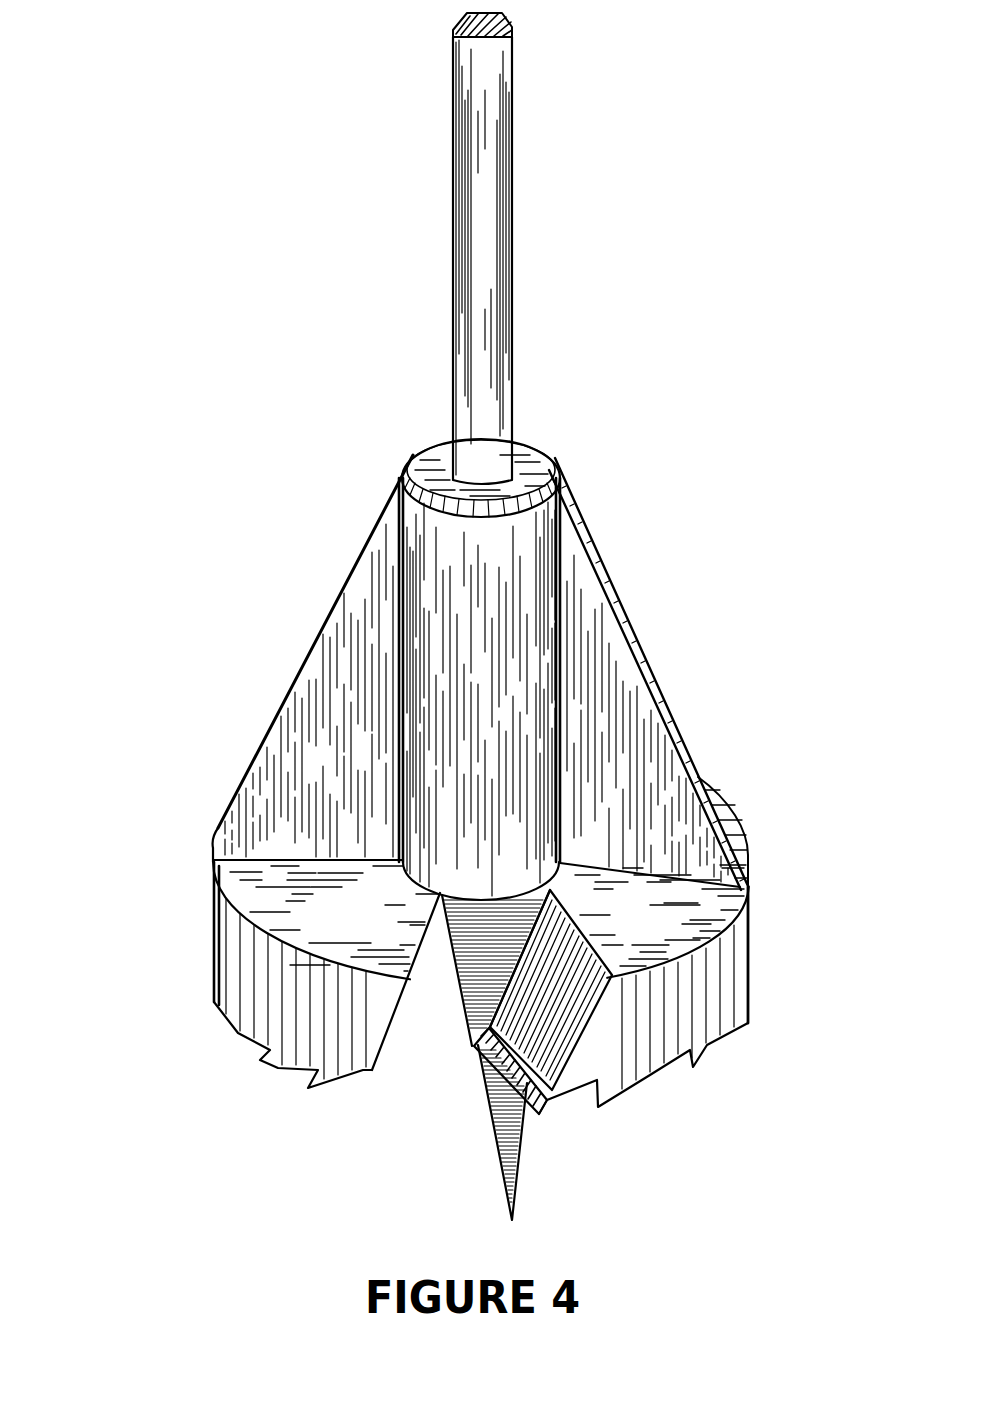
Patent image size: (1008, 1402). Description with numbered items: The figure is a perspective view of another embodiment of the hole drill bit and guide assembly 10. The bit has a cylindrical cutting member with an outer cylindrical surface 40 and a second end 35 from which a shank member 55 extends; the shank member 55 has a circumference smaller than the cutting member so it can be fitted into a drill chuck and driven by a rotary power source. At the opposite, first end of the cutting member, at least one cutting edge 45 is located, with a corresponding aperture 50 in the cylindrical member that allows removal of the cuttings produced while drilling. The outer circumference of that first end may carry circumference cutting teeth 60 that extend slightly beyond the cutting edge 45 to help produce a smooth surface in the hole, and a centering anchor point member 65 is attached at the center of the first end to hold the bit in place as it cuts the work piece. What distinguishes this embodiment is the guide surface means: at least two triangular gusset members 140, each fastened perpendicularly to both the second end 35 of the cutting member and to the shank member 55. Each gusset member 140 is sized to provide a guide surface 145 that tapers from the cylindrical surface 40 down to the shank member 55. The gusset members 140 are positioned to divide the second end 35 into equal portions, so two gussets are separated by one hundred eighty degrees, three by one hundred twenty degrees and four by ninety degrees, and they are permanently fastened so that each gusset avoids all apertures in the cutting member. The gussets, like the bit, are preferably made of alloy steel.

The drill bit and guide assembly 10 is at (783, 348).
The second end 35 is at (372, 939).
The cylindrical surface 40 is at (252, 973).
The cutting edge 45 is at (488, 1086).
The aperture 50 is at (423, 1052).
The shank member 55 is at (506, 242).
The circumference cutting teeth 60 is at (279, 1068).
The centering anchor point member 65 is at (519, 1147).
The triangular gusset member 140 is at (323, 772).
The guide surface 145 is at (318, 633).